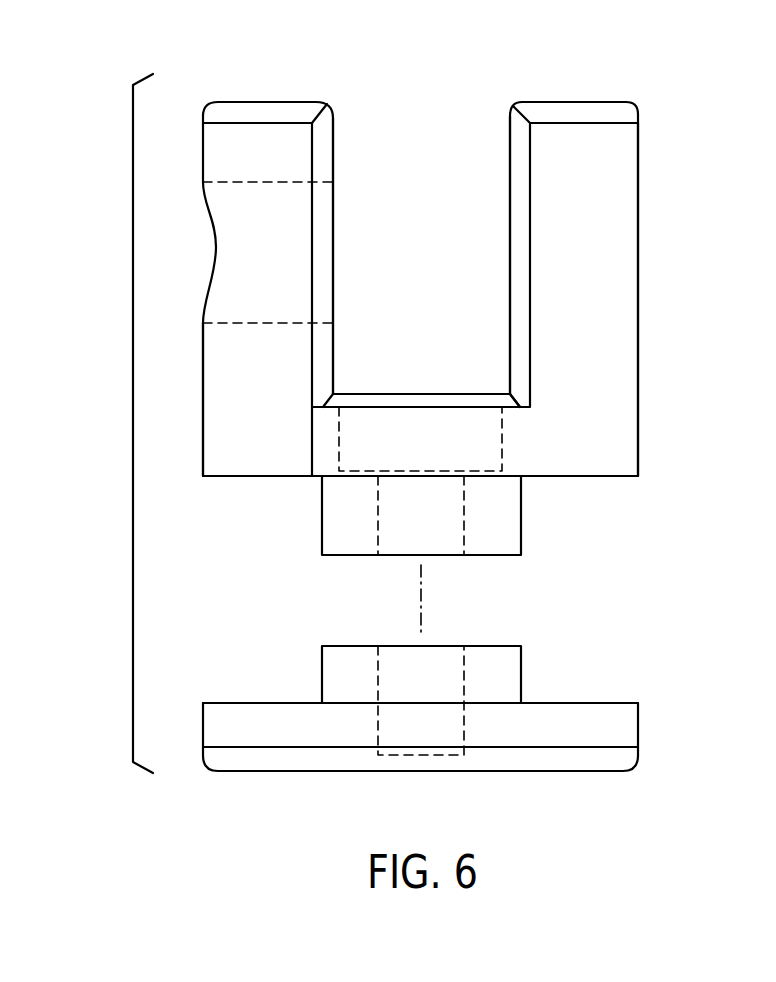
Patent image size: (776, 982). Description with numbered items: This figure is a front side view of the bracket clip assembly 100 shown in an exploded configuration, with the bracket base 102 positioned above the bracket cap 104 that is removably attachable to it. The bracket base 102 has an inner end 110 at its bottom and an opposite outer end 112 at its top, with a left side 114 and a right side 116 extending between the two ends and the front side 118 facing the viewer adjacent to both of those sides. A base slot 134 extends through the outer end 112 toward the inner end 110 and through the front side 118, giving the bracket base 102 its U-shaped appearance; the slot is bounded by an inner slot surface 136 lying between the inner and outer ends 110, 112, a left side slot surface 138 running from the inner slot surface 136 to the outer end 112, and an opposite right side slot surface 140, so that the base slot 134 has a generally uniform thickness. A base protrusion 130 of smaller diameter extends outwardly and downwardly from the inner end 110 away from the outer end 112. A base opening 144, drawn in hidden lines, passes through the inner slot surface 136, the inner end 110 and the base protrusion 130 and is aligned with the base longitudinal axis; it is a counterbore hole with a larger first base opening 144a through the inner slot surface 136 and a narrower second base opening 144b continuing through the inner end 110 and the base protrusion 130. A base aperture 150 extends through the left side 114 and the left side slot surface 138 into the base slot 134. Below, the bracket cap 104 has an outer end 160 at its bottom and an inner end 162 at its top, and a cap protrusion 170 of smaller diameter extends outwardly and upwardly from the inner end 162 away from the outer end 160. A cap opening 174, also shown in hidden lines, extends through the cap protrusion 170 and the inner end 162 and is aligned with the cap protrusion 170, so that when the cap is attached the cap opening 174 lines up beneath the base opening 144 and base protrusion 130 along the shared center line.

The bracket clip assembly 100 is at (612, 79).
The bracket base 102 is at (605, 187).
The bracket cap 104 is at (547, 730).
The inner end 110 is at (585, 477).
The outer end 112 is at (568, 102).
The left side 114 is at (203, 420).
The right side 116 is at (638, 270).
The front side 118 is at (320, 442).
The base protrusion 130 is at (322, 528).
The base slot 134 is at (415, 116).
The inner slot surface 136 is at (510, 393).
The left side slot surface 138 is at (333, 135).
The right side slot surface 140 is at (510, 252).
The base opening 144 is at (413, 390).
The first base opening 144a is at (508, 446).
The second base opening 144b is at (468, 515).
The base aperture 150 is at (336, 288).
The outer end 160 is at (340, 771).
The inner end 162 is at (583, 703).
The cap protrusion 170 is at (322, 675).
The cap opening 174 is at (468, 675).